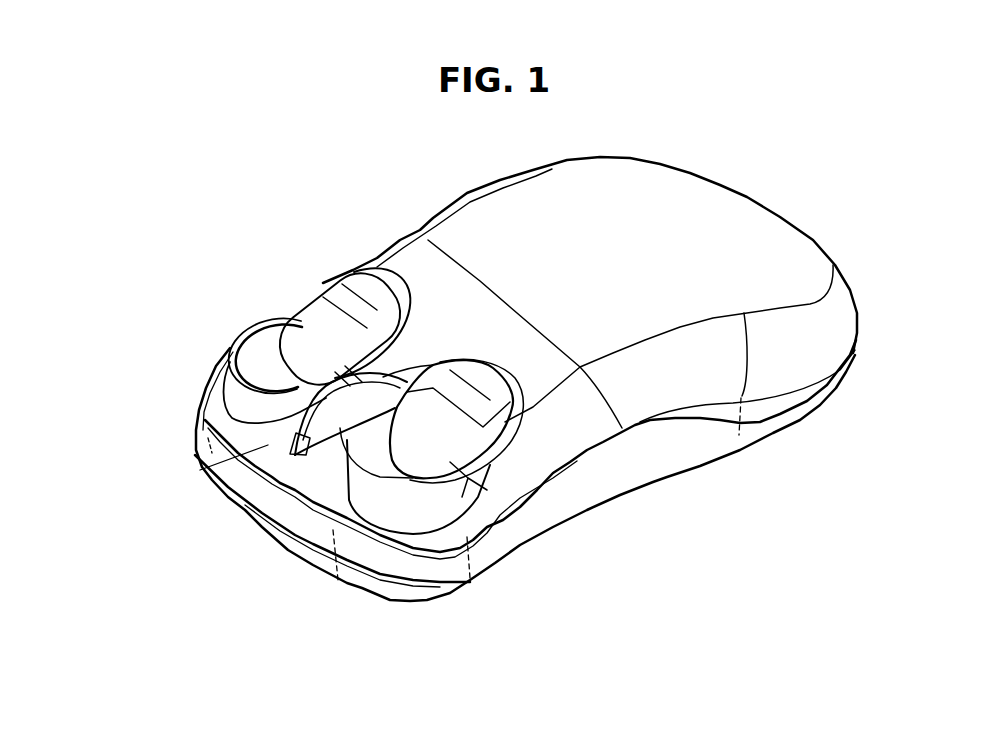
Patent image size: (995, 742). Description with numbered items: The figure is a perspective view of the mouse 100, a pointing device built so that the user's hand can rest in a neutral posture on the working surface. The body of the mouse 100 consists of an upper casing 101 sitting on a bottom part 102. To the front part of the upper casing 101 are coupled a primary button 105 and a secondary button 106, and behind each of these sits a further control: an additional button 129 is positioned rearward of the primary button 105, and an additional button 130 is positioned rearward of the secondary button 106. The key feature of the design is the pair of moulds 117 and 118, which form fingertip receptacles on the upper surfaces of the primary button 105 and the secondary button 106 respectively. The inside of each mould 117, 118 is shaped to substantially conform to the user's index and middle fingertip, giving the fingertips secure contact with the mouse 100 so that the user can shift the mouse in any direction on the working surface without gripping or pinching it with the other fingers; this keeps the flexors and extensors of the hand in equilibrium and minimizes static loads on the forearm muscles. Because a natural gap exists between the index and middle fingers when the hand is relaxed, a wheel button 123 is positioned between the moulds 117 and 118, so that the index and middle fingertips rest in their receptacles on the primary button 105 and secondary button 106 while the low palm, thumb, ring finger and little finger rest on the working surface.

The mouse 100 is at (240, 224).
The upper casing 101 is at (710, 390).
The bottom part 102 is at (613, 473).
The primary button 105 is at (337, 507).
The secondary button 106 is at (200, 470).
The mould 117 is at (413, 507).
The mould 118 is at (237, 387).
The wheel button 123 is at (345, 415).
The additional button 129 is at (490, 445).
The additional button 130 is at (323, 283).